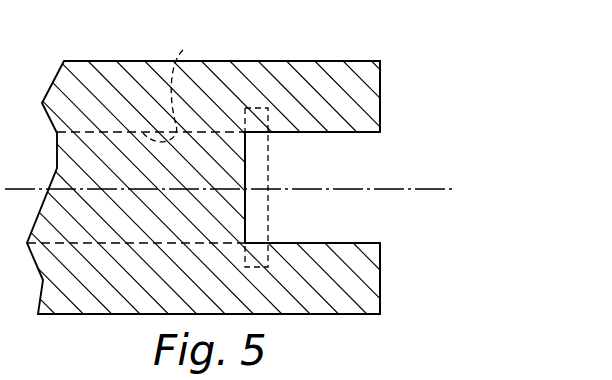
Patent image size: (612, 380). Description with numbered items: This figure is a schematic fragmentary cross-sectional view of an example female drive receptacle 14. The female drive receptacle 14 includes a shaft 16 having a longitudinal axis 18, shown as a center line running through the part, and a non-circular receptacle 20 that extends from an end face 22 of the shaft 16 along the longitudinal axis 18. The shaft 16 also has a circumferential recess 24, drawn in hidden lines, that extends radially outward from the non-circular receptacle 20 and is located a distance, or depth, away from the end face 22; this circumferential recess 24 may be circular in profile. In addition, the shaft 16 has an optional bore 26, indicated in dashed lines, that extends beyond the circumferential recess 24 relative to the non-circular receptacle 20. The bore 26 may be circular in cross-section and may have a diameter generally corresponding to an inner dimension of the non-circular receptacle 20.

The female drive receptacle 14 is at (323, 46).
The shaft 16 is at (104, 58).
The longitudinal axis 18 is at (424, 190).
The non-circular receptacle 20 is at (358, 133).
The end face 22 is at (381, 97).
The circumferential recess 24 is at (247, 108).
The bore 26 is at (169, 86).